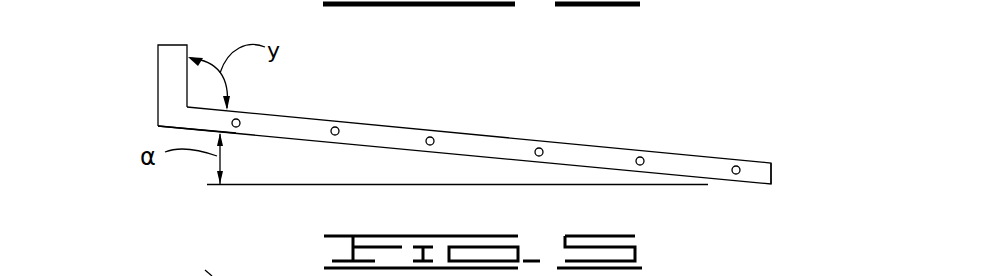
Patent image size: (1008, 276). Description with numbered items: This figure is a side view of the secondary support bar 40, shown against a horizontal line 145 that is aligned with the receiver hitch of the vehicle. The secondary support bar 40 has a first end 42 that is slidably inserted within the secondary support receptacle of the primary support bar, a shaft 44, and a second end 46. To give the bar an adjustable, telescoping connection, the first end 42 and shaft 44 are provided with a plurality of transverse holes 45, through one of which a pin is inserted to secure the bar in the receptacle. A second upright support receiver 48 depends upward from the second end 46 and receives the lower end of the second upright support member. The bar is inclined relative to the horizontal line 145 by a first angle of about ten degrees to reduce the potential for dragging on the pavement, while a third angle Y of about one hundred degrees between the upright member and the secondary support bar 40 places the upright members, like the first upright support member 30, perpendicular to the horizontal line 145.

The first upright support member 30 is at (210, 275).
The secondary support bar 40 is at (688, 80).
The first end 42 is at (773, 175).
The shaft 44 is at (450, 128).
The plurality of transverse holes 45 is at (336, 127).
The second end 46 is at (190, 123).
The second upright support receiver 48 is at (158, 67).
The horizontal line 145 is at (333, 184).